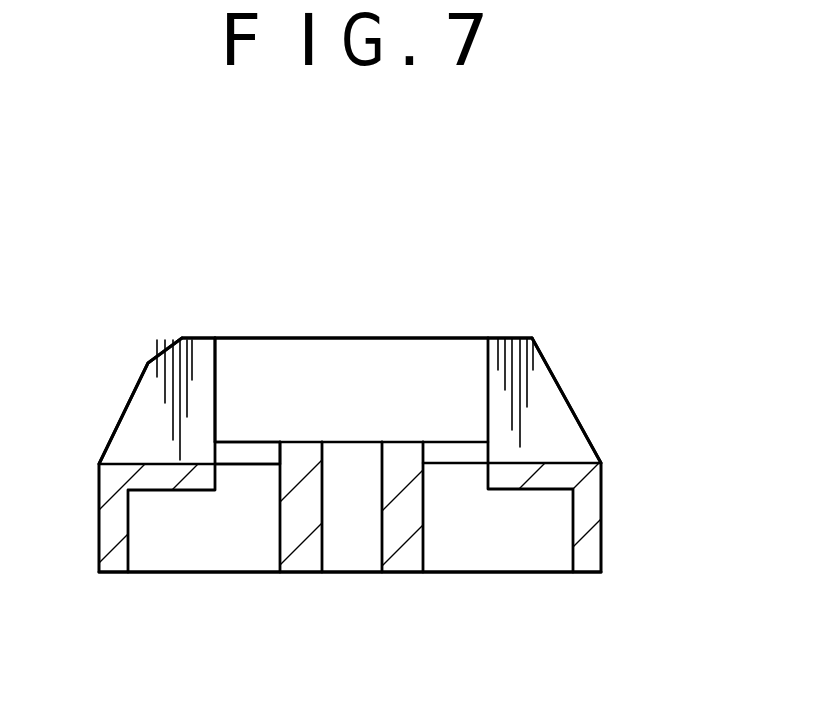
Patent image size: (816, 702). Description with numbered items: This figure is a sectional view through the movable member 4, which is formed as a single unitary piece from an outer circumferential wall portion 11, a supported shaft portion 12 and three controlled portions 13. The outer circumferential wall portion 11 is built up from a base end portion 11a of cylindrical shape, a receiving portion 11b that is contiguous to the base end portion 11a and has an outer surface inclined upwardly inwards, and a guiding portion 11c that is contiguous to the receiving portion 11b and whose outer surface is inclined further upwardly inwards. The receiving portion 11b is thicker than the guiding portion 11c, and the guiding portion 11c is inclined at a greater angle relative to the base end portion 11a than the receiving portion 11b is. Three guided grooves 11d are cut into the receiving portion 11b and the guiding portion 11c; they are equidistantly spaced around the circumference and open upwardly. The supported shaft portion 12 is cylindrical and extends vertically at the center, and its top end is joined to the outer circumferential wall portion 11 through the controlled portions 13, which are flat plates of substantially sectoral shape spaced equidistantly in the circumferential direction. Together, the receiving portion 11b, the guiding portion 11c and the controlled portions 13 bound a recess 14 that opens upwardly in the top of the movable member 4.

The movable member 4 is at (562, 288).
The outer circumferential wall portion 11 is at (593, 488).
The base end portion 11a is at (593, 552).
The receiving portion 11b is at (577, 400).
The guiding portion 11c is at (543, 345).
The guided grooves 11d is at (141, 415).
The supported shaft portion 12 is at (403, 557).
The controlled portions 13 is at (250, 457).
The recess 14 is at (217, 396).